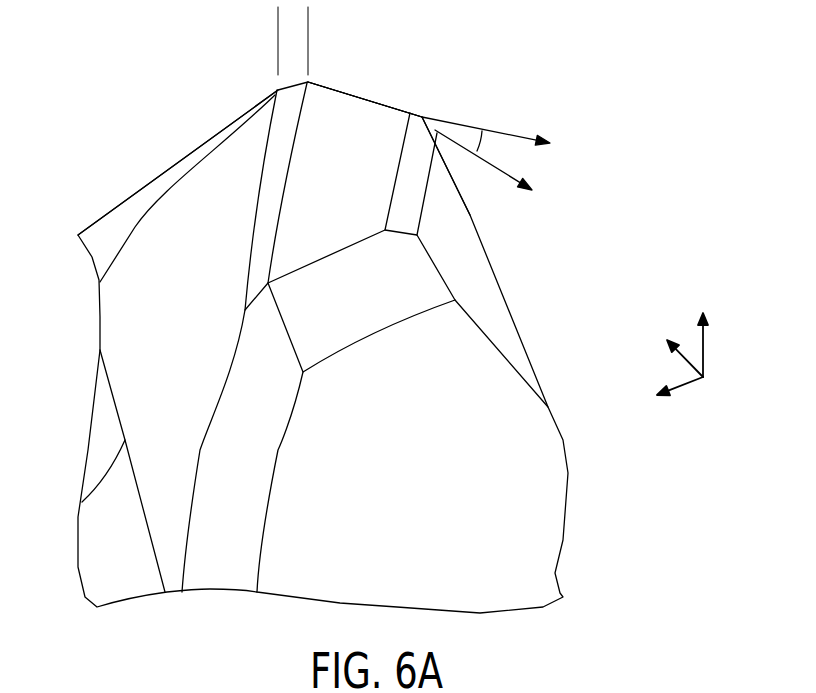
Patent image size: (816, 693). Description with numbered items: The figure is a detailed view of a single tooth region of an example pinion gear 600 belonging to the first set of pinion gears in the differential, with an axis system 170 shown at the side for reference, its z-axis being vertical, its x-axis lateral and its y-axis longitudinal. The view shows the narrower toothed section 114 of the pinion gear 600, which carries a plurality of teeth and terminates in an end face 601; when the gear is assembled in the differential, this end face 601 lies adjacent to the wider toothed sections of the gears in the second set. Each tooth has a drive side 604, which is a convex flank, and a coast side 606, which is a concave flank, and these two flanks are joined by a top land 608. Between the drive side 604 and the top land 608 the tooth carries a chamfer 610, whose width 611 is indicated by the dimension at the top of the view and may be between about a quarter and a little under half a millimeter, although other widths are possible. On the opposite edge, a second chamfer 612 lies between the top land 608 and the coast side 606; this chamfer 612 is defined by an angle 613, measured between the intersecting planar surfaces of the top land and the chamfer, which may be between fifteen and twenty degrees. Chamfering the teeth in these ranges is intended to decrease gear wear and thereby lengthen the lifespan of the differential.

The narrower toothed section 114 is at (127, 151).
The axis system 170 is at (745, 345).
The pinion gear 600 is at (667, 137).
The end face 601 is at (503, 462).
The drive side 604 is at (162, 267).
The coast side 606 is at (480, 280).
The top land 608 is at (342, 117).
The chamfer 610 is at (270, 172).
The width 611 is at (321, 30).
The chamfer 612 is at (415, 142).
The angle 613 is at (482, 146).